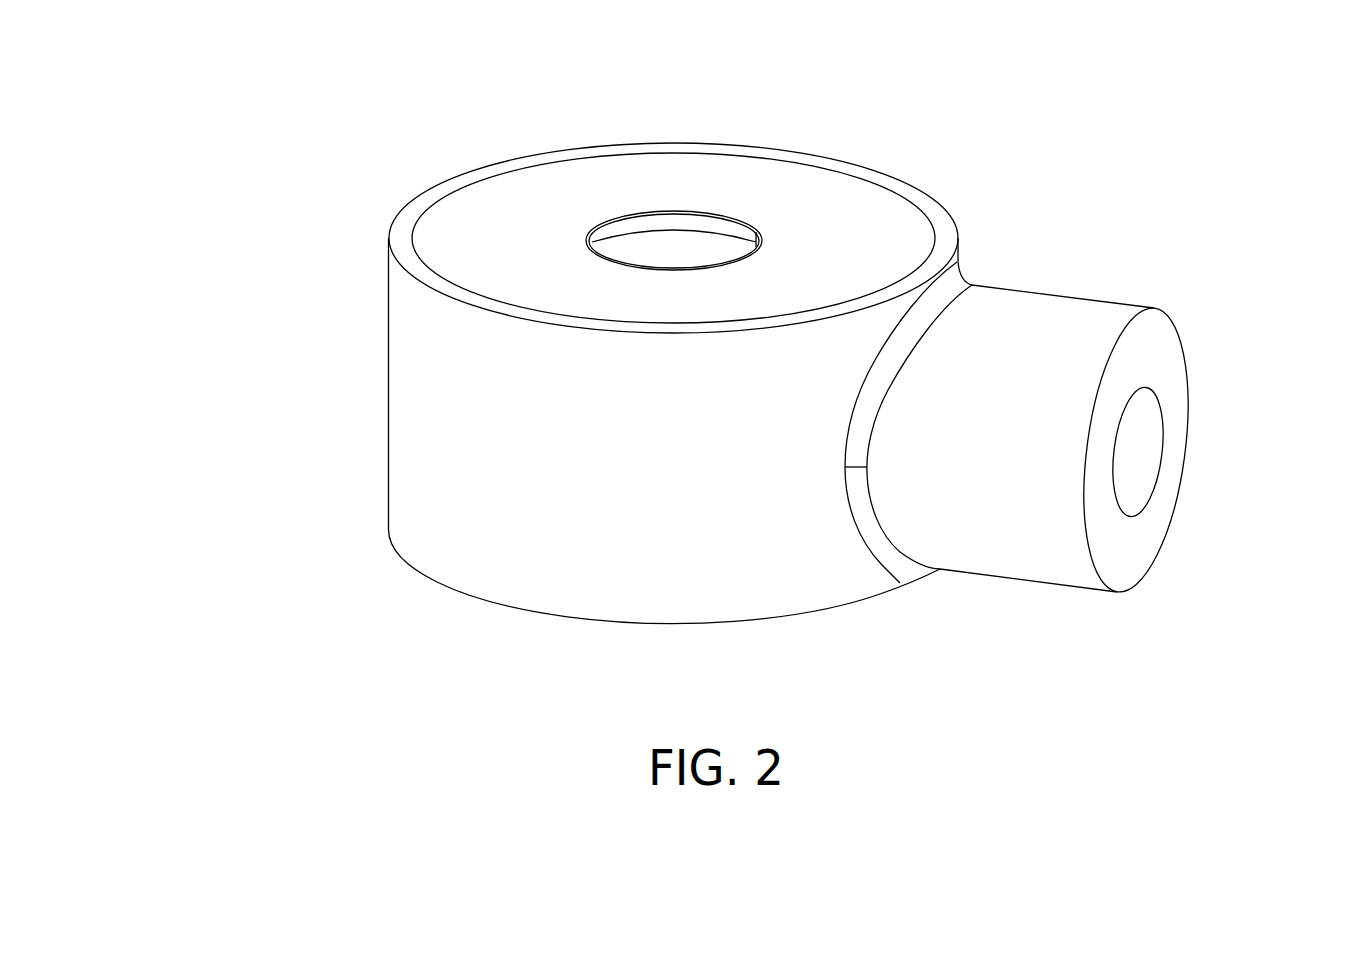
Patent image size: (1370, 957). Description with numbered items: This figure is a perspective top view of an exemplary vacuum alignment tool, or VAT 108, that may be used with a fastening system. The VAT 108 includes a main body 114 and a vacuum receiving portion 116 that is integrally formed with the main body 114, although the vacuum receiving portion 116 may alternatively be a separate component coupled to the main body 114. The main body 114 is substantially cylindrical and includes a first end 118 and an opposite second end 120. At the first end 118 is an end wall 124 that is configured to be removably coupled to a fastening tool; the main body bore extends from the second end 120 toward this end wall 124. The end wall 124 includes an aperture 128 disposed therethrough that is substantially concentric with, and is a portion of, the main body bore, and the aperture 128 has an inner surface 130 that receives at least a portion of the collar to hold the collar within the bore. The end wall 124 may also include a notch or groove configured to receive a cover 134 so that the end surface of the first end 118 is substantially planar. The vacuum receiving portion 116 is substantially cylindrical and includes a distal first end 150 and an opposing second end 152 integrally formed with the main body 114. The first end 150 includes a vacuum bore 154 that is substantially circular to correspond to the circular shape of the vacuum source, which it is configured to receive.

The vacuum alignment tool 108 is at (298, 100).
The first end 118 is at (372, 208).
The end wall 124 is at (510, 193).
The cover 134 is at (878, 222).
The main body 114 is at (435, 398).
The second end 120 is at (404, 587).
The aperture 128 is at (664, 229).
The inner surface 130 is at (703, 223).
The second end 152 is at (975, 260).
The vacuum receiving portion 116 is at (1057, 310).
The distal first end 150 is at (1118, 610).
The vacuum bore 154 is at (1153, 455).